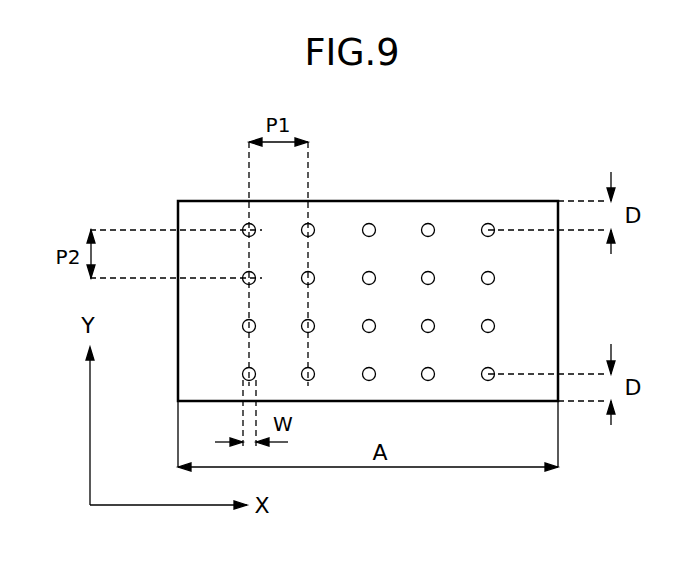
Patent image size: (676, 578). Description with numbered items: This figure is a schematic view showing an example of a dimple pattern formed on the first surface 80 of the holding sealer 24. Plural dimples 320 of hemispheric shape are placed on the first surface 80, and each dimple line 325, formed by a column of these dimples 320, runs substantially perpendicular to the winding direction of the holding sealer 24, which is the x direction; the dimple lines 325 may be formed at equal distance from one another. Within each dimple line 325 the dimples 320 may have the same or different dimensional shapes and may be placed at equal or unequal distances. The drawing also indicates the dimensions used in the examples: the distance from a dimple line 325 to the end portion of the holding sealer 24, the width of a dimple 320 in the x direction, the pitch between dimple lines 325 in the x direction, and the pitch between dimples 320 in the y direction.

The first surface 80 is at (205, 201).
The holding sealer 24 is at (468, 201).
The dimples 320 is at (369, 224).
The dimple line 325 is at (365, 213).